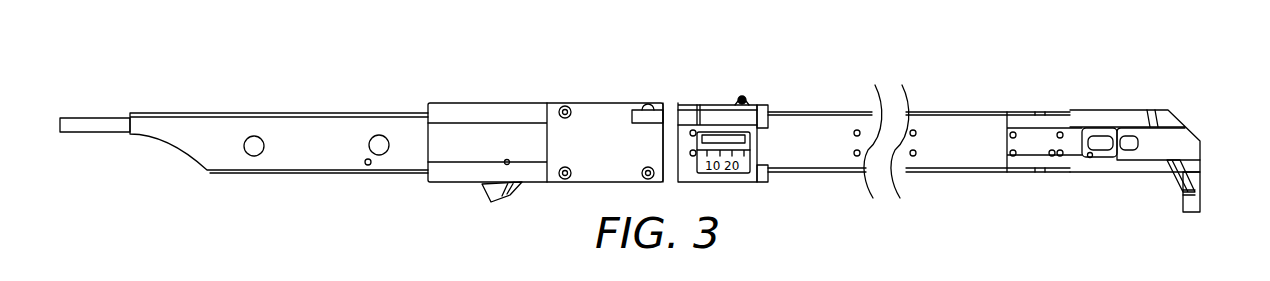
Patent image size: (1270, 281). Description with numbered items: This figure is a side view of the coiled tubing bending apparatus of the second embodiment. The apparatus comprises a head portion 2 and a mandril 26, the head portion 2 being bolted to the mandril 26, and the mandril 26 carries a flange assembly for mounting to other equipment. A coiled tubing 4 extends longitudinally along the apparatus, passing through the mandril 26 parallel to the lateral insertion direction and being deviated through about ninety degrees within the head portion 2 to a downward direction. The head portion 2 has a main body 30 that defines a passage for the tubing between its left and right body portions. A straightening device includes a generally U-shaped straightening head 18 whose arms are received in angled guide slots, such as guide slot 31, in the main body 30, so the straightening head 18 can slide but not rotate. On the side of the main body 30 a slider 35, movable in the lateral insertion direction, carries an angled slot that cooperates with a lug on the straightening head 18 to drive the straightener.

The head portion 2 is at (1040, 107).
The coiled tubing 4 is at (87, 120).
The straightening head 18 is at (1180, 177).
The mandril 26 is at (504, 103).
The main body 30 is at (1103, 115).
The guide slot 31 is at (1152, 115).
The slider 35 is at (1187, 138).